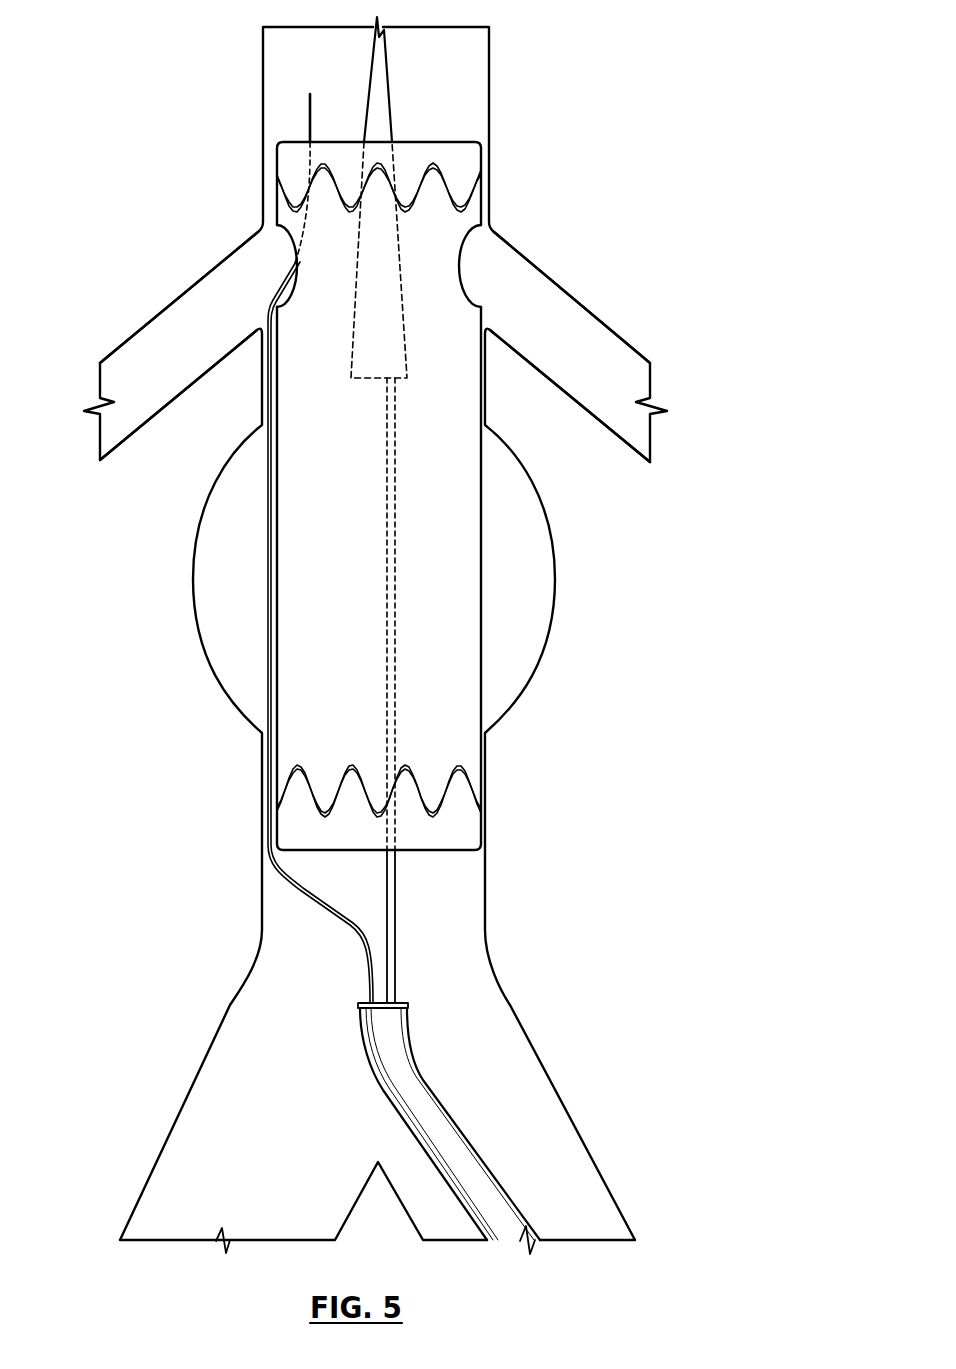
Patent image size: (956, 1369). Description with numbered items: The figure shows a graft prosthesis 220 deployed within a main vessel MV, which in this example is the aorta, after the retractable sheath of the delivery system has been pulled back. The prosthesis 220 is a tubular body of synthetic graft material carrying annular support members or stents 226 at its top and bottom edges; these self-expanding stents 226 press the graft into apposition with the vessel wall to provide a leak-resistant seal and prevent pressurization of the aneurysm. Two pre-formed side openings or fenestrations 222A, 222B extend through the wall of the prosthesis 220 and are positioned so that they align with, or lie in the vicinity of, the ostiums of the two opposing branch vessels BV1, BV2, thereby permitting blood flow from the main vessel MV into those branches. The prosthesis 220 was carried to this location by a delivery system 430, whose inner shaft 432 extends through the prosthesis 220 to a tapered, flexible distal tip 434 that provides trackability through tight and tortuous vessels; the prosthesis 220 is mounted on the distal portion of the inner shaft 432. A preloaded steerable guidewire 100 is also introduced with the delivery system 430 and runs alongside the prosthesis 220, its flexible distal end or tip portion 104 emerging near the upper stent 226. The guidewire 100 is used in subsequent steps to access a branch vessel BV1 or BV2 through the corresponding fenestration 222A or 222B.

The steerable guidewire 100 is at (330, 905).
The distal end or tip portion 104 is at (306, 128).
The graft prosthesis 220 is at (452, 728).
The side opening or fenestration 222A is at (290, 260).
The side opening or fenestration 222B is at (468, 266).
The annular support member or stent 226 is at (448, 183).
The delivery system 430 is at (475, 1132).
The inner shaft 432 is at (395, 900).
The distal tip 434 is at (390, 100).
The main vessel MV is at (262, 884).
The branch vessel BV1 is at (142, 328).
The branch vessel BV2 is at (585, 307).